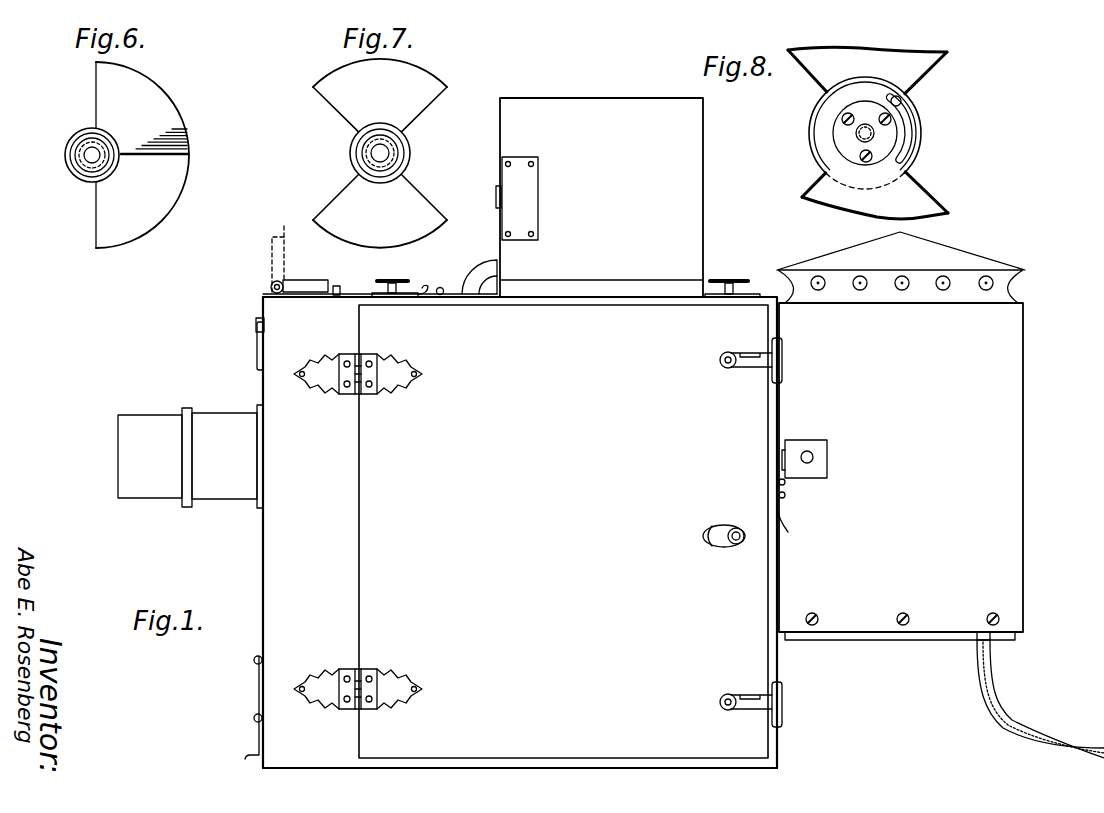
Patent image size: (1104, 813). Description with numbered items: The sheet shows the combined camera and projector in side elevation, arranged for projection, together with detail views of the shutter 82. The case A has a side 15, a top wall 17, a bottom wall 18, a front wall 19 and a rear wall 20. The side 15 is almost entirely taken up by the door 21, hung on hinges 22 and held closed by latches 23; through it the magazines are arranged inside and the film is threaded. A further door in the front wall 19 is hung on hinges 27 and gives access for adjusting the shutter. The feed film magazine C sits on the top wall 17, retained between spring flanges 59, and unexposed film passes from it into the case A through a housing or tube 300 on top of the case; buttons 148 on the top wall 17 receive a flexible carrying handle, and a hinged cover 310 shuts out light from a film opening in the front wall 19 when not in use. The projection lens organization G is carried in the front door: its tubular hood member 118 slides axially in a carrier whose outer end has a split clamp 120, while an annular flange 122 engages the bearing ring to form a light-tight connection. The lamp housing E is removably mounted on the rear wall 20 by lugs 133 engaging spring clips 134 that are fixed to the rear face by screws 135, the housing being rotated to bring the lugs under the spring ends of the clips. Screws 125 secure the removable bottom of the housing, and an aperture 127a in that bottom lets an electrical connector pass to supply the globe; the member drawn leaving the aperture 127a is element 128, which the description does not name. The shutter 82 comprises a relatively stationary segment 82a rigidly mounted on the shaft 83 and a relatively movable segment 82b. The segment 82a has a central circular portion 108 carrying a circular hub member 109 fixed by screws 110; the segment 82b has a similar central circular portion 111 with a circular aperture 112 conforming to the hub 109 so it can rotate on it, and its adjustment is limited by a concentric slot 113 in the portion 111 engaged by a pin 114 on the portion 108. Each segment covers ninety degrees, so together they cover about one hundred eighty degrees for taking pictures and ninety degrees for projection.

In FIG. 1, the side 15 is at (296, 530).
In FIG. 1, the top wall 17 is at (344, 303).
In FIG. 1, the bottom wall 18 is at (356, 768).
In FIG. 1, the front wall 19 is at (262, 556).
In FIG. 1, the rear wall 20 is at (778, 740).
In FIG. 1, the door 21 is at (563, 531).
In FIG. 1, the hinges 22 is at (366, 391).
In FIG. 1, the latches 23 is at (739, 371).
In FIG. 1, the hinges 27 is at (254, 662).
In FIG. 1, the spring flanges 59 is at (551, 292).
In FIG. 6, the shutter 82 is at (89, 192).
In FIG. 7, the shutter 82 is at (356, 174).
In FIG. 6, the relatively stationary segment 82a is at (154, 176).
In FIG. 7, the relatively stationary segment 82a is at (408, 211).
In FIG. 8, the relatively stationary segment 82a is at (867, 70).
In FIG. 6, the relatively movable segment 82b is at (149, 119).
In FIG. 7, the relatively movable segment 82b is at (397, 116).
In FIG. 8, the relatively movable segment 82b is at (875, 195).
In FIG. 6, the shaft 83 is at (86, 155).
In FIG. 7, the shaft 83 is at (378, 153).
In FIG. 8, the shaft 83 is at (862, 139).
In FIG. 8, the central circular portion 108 is at (924, 145).
In FIG. 8, the circular hub member 109 is at (905, 158).
In FIG. 8, the screws 110 is at (891, 119).
In FIG. 8, the central circular portion 111 is at (826, 150).
In FIG. 8, the circular aperture 112 is at (842, 119).
In FIG. 8, the concentric slot 113 is at (906, 112).
In FIG. 8, the pin 114 is at (898, 96).
In FIG. 1, the tubular hood member 118 is at (137, 428).
In FIG. 1, the split clamp 120 is at (186, 406).
In FIG. 1, the annular flange 122 is at (262, 459).
In FIG. 1, the screws 125 is at (820, 606).
In FIG. 1, the aperture 127a is at (977, 643).
In FIG. 1, the cable 128 is at (985, 703).
In FIG. 1, the lugs 133 is at (796, 452).
In FIG. 1, the spring clips 134 is at (800, 524).
In FIG. 1, the screws 135 is at (786, 482).
In FIG. 1, the buttons 148 is at (403, 279).
In FIG. 1, the housing or tube 300 is at (478, 274).
In FIG. 1, the cover 310 is at (255, 736).
In FIG. 1, the case A is at (604, 320).
In FIG. 1, the film magazine C is at (678, 187).
In FIG. 1, the lamp housing E is at (996, 552).
In FIG. 1, the projection lens organization G is at (188, 461).